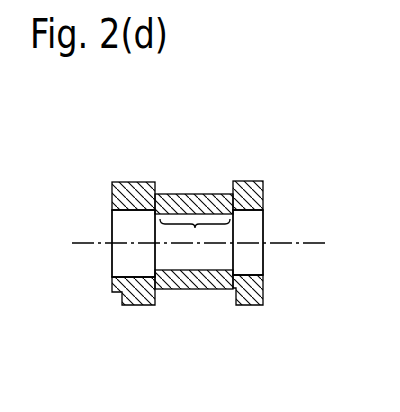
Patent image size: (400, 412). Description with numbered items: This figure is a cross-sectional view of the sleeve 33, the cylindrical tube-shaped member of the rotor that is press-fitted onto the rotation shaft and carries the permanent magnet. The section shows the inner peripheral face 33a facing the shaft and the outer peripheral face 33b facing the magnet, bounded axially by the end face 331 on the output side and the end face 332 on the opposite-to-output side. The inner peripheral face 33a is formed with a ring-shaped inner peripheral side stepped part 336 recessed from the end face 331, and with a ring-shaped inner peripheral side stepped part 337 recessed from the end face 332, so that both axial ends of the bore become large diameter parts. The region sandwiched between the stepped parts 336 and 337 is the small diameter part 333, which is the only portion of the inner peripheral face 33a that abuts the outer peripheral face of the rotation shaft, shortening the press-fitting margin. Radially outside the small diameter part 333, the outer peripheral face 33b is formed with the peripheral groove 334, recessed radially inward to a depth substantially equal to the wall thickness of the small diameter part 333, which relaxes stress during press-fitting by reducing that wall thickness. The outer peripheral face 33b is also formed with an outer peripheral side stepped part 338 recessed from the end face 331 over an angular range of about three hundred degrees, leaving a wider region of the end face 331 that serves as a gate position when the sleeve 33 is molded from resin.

The sleeve 33 is at (190, 248).
The end face on the output side 331 is at (112, 196).
The end face on the opposite-to-output side 332 is at (263, 200).
The small diameter part 333 is at (195, 240).
The peripheral groove 334 is at (185, 194).
The inner peripheral side stepped part 336 is at (133, 211).
The inner peripheral side stepped part 337 is at (250, 210).
The outer peripheral side stepped part 338 is at (122, 305).
The inner peripheral face 33a is at (193, 270).
The outer peripheral face 33b is at (250, 305).